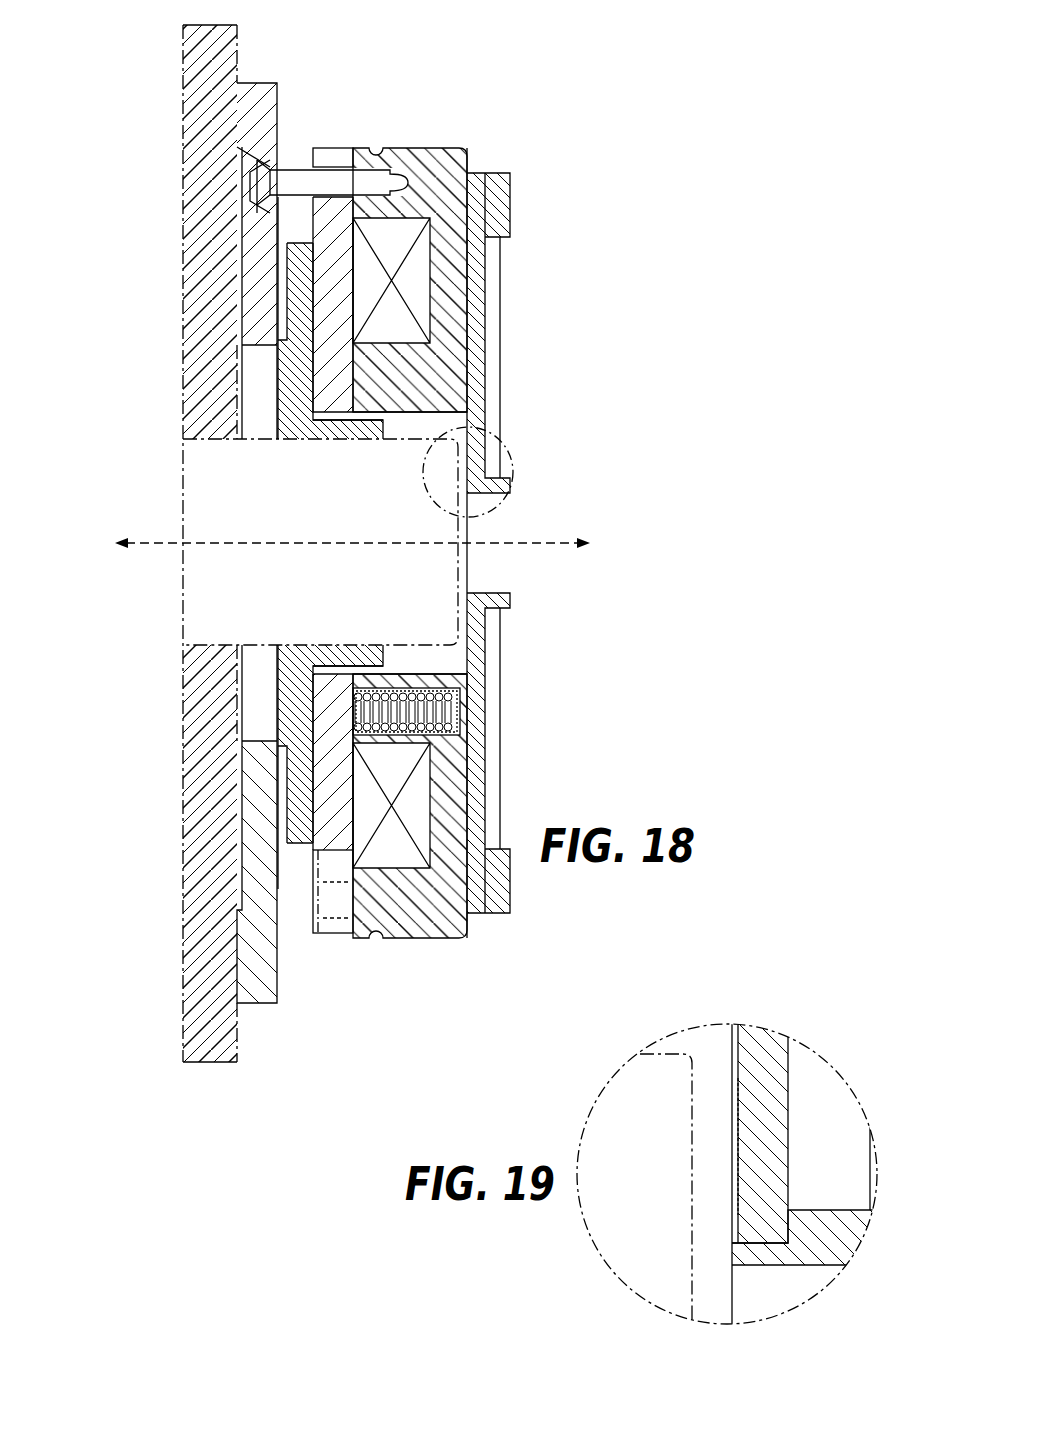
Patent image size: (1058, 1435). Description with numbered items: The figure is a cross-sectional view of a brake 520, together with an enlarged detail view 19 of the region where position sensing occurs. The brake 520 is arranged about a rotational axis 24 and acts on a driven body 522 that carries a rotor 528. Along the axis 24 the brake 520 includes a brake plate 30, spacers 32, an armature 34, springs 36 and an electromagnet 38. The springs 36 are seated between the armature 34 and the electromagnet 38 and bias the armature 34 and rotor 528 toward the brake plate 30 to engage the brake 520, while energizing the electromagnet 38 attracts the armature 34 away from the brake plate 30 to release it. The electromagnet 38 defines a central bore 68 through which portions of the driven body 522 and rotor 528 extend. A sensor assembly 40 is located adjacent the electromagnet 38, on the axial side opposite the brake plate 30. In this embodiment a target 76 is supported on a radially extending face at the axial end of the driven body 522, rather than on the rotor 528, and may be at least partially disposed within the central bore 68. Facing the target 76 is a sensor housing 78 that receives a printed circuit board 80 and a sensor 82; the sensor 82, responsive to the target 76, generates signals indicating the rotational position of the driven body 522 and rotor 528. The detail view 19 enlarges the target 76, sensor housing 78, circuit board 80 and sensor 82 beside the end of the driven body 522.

In FIG. 18, the detail view circle FIG. 19 is at (428, 497).
In FIG. 18, the rotational axis 24 is at (149, 549).
In FIG. 18, the brake plate 30 is at (262, 93).
In FIG. 18, the spacers 32 is at (290, 172).
In FIG. 18, the armature 34 is at (333, 262).
In FIG. 18, the springs 36 is at (420, 716).
In FIG. 18, the electromagnet 38 is at (440, 185).
In FIG. 18, the sensor assembly 40 is at (488, 470).
In FIG. 18, the central bore 68 is at (418, 657).
In FIG. 19, the target 76 is at (692, 1142).
In FIG. 19, the sensor housing 78 is at (840, 1234).
In FIG. 19, the printed circuit board 80 is at (767, 1137).
In FIG. 19, the sensor 82 is at (738, 1157).
In FIG. 18, the brake 520 is at (148, 248).
In FIG. 18, the driven body 522 is at (408, 612).
In FIG. 19, the driven body 522 is at (632, 1222).
In FIG. 18, the rotor 528 is at (290, 420).